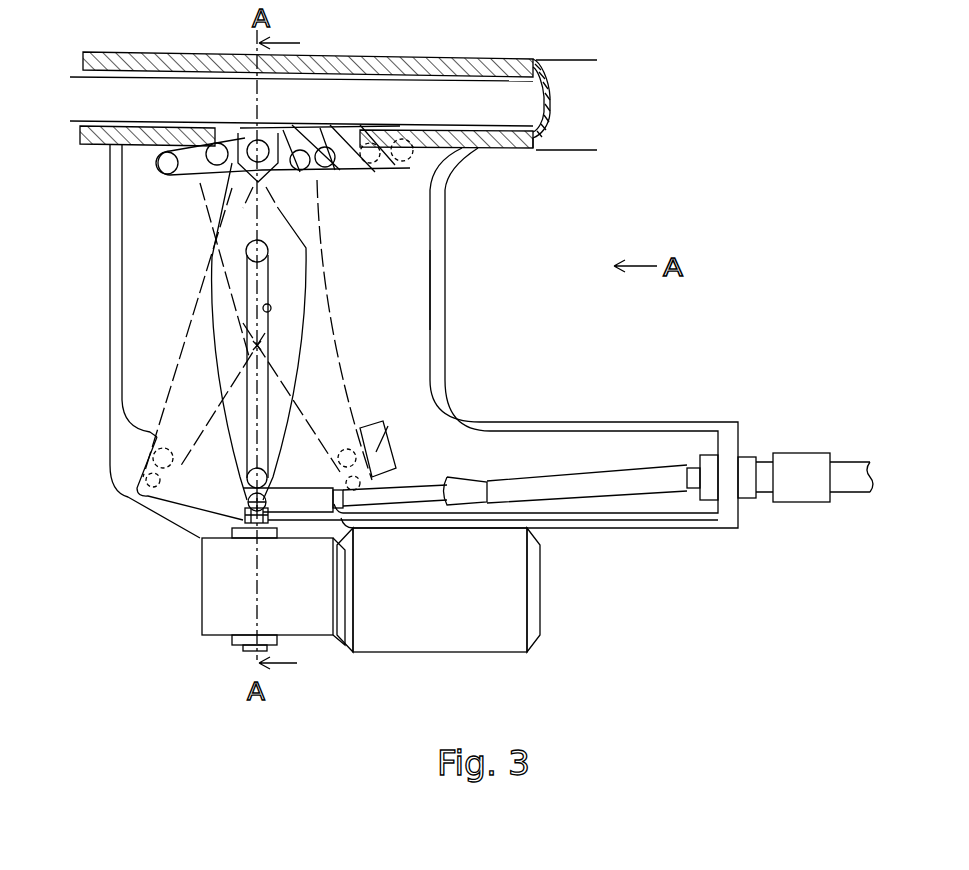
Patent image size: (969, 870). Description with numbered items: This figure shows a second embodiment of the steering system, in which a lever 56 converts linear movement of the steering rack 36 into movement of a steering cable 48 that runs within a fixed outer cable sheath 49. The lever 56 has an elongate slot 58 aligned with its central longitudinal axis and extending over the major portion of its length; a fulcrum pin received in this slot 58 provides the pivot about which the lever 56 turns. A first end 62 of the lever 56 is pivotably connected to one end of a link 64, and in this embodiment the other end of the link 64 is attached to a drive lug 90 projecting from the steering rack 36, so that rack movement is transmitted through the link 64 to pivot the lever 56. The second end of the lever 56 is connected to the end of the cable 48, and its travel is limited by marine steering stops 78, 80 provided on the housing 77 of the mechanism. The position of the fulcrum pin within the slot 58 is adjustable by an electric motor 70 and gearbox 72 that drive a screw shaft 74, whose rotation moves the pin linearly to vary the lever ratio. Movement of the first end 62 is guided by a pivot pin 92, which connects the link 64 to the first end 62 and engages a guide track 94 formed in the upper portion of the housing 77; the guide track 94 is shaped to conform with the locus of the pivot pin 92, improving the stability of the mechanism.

The steering rack 36 is at (490, 104).
The cable 48 is at (440, 487).
The fixed outer cable sheath 49 is at (575, 485).
The lever 56 is at (252, 192).
The elongate slot 58 is at (267, 317).
The first end of the lever 62 is at (265, 228).
The link 64 is at (281, 164).
The electric motor 70 is at (441, 574).
The gearbox 72 is at (316, 611).
The screw shaft 74 is at (237, 515).
The housing 77 is at (433, 290).
The marine steering stop 78 is at (386, 421).
The marine steering stop 80 is at (130, 453).
The drive lug 90 is at (358, 151).
The pivot pin 92 is at (264, 138).
The guide track 94 is at (184, 170).